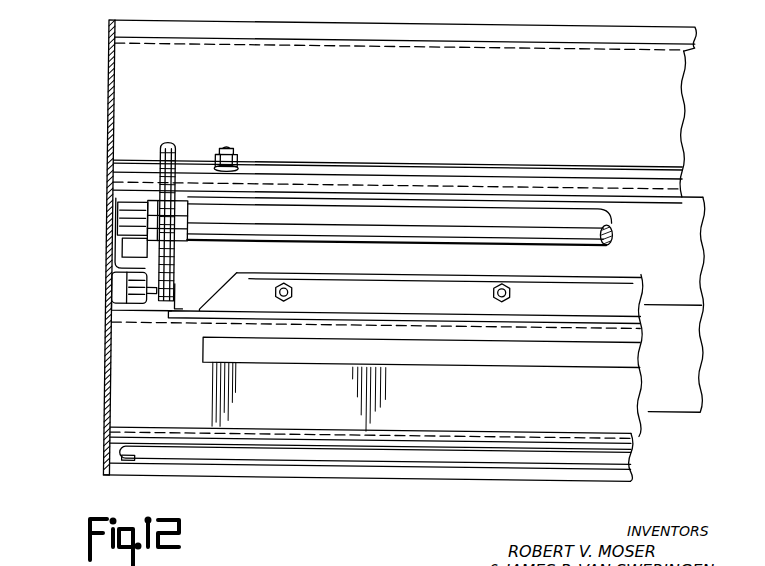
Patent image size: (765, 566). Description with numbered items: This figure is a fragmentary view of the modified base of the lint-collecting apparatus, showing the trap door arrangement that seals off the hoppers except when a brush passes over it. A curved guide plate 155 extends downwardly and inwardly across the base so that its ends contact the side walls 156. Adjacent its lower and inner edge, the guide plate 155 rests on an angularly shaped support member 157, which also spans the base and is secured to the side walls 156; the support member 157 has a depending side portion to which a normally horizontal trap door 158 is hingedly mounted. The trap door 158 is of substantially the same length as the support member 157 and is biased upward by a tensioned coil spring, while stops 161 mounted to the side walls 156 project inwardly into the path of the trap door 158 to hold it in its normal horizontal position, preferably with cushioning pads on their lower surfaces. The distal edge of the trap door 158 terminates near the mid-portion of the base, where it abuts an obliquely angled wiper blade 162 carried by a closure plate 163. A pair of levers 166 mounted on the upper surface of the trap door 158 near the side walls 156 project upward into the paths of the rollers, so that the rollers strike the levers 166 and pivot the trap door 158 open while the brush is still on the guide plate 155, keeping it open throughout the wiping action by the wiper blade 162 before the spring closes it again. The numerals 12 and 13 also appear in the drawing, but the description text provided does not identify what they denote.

The drive chain 12 is at (167, 143).
The bolt 13 is at (185, 156).
The guide plate 155 is at (646, 383).
The side walls 156 is at (109, 343).
The support member 157 is at (699, 328).
The trap door 158 is at (698, 238).
The stops 161 is at (117, 189).
The wiper blade 162 is at (692, 184).
The closure plate 163 is at (676, 99).
The levers 166 is at (151, 262).